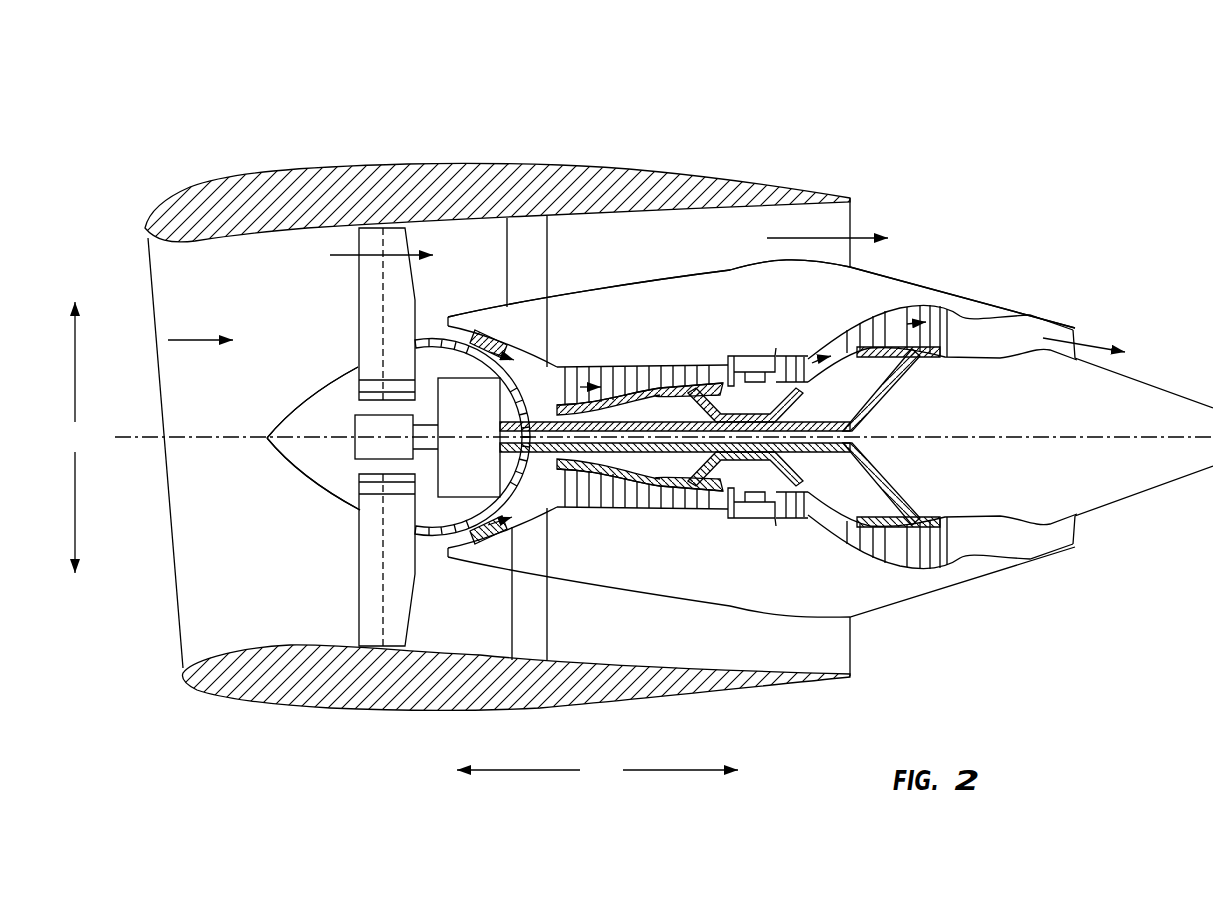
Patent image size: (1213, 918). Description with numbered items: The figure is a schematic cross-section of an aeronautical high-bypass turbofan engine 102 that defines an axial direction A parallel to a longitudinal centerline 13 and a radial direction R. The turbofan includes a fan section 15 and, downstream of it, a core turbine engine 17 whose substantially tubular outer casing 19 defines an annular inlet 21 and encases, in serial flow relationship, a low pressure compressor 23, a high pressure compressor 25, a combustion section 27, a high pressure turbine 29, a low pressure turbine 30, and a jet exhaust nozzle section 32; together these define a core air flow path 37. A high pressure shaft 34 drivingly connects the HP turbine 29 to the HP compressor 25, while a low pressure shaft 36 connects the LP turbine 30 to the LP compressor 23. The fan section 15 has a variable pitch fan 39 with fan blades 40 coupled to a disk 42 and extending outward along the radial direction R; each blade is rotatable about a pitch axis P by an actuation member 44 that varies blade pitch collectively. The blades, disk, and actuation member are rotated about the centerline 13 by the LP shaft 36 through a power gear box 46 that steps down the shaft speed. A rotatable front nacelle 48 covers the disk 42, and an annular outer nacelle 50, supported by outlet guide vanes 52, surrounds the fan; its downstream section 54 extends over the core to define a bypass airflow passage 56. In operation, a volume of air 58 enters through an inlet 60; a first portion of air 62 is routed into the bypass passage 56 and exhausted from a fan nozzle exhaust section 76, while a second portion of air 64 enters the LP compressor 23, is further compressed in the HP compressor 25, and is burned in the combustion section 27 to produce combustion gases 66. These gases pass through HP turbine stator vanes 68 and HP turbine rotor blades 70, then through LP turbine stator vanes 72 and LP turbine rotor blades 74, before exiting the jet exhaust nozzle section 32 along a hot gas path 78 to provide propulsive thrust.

The longitudinal centerline 13 is at (1015, 437).
The fan section 15 is at (213, 168).
The core turbine engine 17 is at (680, 307).
The outer casing 19 is at (727, 605).
The annular inlet 21 is at (472, 538).
The low pressure compressor 23 is at (540, 500).
The high pressure compressor 25 is at (590, 492).
The combustion section 27 is at (747, 508).
The high pressure turbine 29 is at (870, 503).
The low pressure turbine 30 is at (934, 566).
The jet exhaust nozzle section 32 is at (992, 548).
The high pressure shaft 34 is at (733, 385).
The low pressure shaft 36 is at (857, 401).
The core air flow path 37 is at (838, 550).
The variable pitch fan 39 is at (311, 485).
The fan blades 40 is at (357, 582).
The disk 42 is at (360, 388).
The actuation member 44 is at (355, 417).
The power gear box 46 is at (480, 415).
The front nacelle 48 is at (278, 452).
The outer nacelle 50 is at (403, 710).
The outlet guide vanes 52 is at (548, 247).
The downstream section 54 is at (783, 191).
The bypass airflow passage 56 is at (735, 245).
The volume of air 58 is at (200, 340).
The inlet 60 is at (175, 620).
The first portion of air 62 is at (343, 258).
The second portion of air 64 is at (430, 332).
The combustion gases 66 is at (787, 372).
The HP turbine stator vanes 68 is at (778, 510).
The HP turbine rotor blades 70 is at (823, 498).
The LP turbine stator vanes 72 is at (841, 543).
The LP turbine rotor blades 74 is at (855, 553).
The fan nozzle exhaust section 76 is at (828, 220).
The hot gas path 78 is at (835, 342).
The turbofan engine 102 is at (950, 190).
The pitch axis P is at (383, 280).
The radial direction R is at (75, 437).
The axial direction A is at (597, 770).